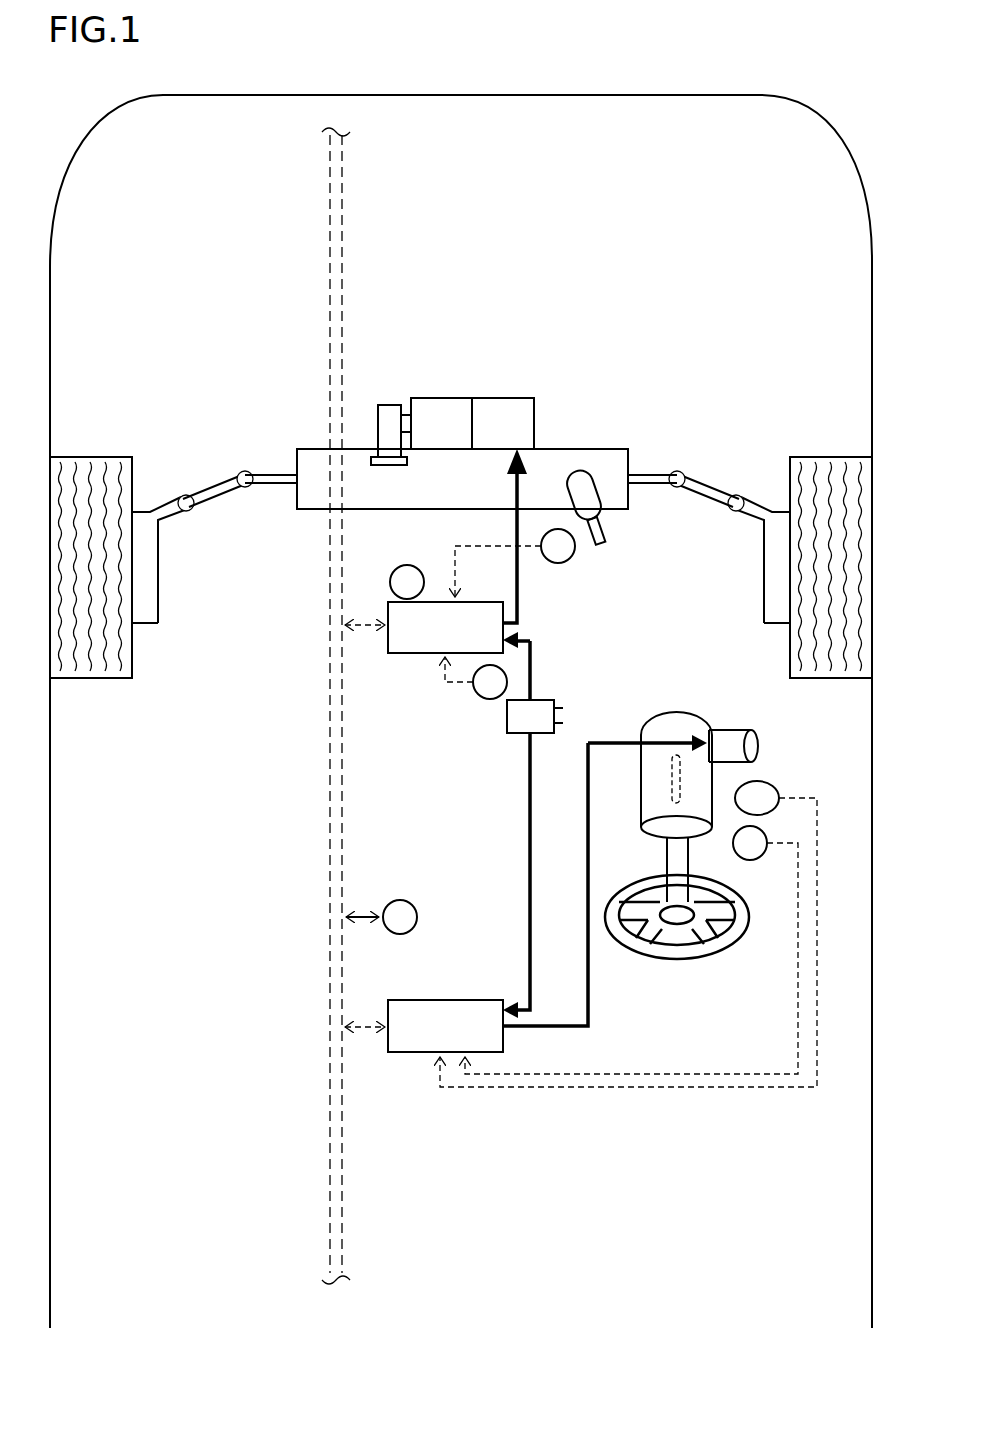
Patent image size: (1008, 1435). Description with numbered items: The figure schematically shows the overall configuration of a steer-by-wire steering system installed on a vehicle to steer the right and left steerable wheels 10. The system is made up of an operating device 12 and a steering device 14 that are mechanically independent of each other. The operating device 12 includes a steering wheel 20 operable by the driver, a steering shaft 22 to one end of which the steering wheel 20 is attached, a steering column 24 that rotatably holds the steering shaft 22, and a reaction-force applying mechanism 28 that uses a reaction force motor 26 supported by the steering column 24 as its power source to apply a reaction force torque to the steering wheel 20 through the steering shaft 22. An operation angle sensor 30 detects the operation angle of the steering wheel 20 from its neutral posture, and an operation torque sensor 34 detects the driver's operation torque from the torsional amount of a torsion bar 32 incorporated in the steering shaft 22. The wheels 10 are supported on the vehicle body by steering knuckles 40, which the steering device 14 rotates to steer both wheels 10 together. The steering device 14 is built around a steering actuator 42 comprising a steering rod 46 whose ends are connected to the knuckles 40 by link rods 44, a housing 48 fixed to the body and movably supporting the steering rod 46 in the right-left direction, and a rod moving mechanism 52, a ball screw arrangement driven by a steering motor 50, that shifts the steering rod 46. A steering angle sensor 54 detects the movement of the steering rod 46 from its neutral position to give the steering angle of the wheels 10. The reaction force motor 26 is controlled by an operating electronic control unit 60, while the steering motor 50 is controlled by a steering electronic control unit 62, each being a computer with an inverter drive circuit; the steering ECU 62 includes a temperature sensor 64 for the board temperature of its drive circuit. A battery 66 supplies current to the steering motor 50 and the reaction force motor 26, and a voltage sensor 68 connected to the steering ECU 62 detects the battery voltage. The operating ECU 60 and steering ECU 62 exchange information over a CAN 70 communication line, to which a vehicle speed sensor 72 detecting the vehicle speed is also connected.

The wheel 10 is at (90, 460).
The operating device 12 is at (730, 1141).
The steering device 14 is at (300, 633).
The steering wheel 20 is at (690, 960).
The steering shaft 22 is at (668, 860).
The steering column 24 is at (641, 766).
The reaction force motor 26 is at (735, 740).
The reaction-force applying mechanism 28 is at (628, 865).
The operation angle sensor 30 is at (752, 862).
The torsion bar 32 is at (665, 782).
The operation torque sensor 34 is at (760, 790).
The steering knuckle 40 is at (150, 595).
The steering actuator 42 is at (468, 454).
The link rod 44 is at (218, 498).
The steering rod 46 is at (650, 475).
The housing 48 is at (585, 453).
The steering motor 50 is at (455, 400).
The rod moving mechanism 52 is at (400, 387).
The steering angle sensor 54 is at (567, 556).
The operating electronic control unit 60 is at (434, 1010).
The steering electronic control unit 62 is at (420, 650).
The temperature sensor 64 is at (405, 566).
The battery 66 is at (540, 725).
The voltage sensor 68 is at (496, 700).
The CAN 70 is at (338, 832).
The vehicle speed sensor 72 is at (403, 900).